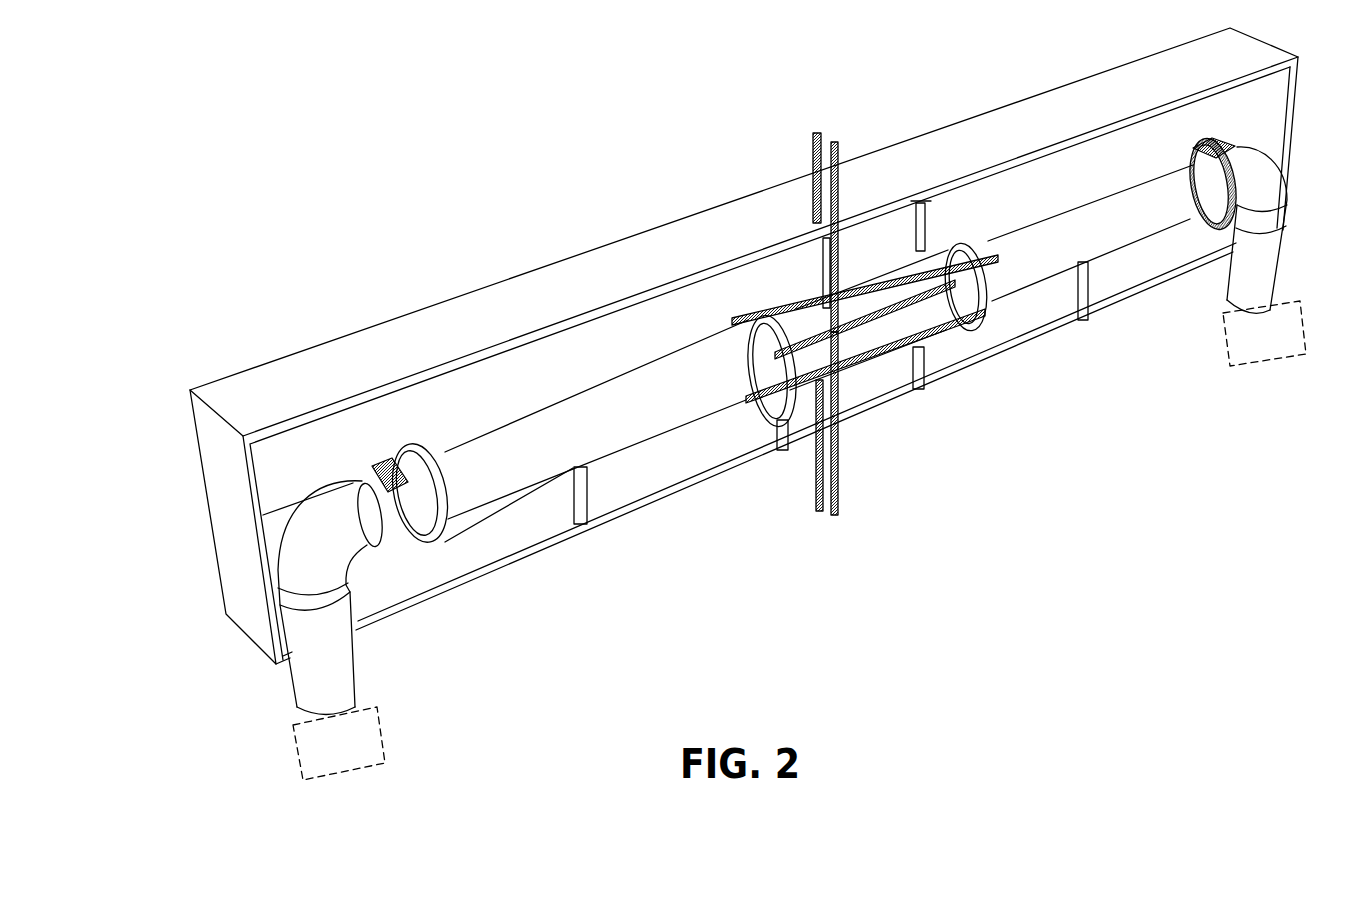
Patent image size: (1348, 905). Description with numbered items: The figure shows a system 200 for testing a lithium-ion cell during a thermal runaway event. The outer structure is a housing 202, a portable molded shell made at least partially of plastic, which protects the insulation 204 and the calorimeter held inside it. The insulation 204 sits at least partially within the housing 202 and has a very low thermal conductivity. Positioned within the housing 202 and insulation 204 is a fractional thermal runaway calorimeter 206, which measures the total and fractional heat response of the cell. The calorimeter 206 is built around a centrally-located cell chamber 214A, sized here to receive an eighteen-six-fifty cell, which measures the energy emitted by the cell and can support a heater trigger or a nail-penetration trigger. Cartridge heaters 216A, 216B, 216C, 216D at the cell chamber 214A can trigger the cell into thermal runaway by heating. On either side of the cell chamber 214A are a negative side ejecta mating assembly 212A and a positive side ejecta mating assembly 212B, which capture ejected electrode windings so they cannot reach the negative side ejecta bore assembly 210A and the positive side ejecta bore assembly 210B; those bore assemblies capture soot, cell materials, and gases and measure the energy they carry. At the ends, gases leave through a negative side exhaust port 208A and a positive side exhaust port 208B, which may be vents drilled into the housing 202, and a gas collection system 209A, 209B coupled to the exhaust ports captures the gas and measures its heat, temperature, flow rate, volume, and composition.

The system 200 is at (405, 205).
The housing 202 is at (248, 375).
The insulation 204 is at (319, 434).
The fractional thermal runaway calorimeter 206 is at (432, 390).
The negative side exhaust port 208A is at (297, 690).
The positive side exhaust port 208B is at (1267, 283).
The gas collection system 209A is at (361, 755).
The gas collection system 209B is at (1286, 349).
The negative side ejecta bore assembly 210A is at (463, 490).
The positive side ejecta bore assembly 210B is at (1080, 241).
The negative side ejecta mating assembly 212A is at (780, 398).
The positive side ejecta mating assembly 212B is at (947, 345).
The cell chamber 214A is at (888, 318).
The cartridge heater 216A is at (812, 150).
The cartridge heater 216B is at (836, 142).
The cartridge heater 216C is at (815, 514).
The cartridge heater 216D is at (840, 498).